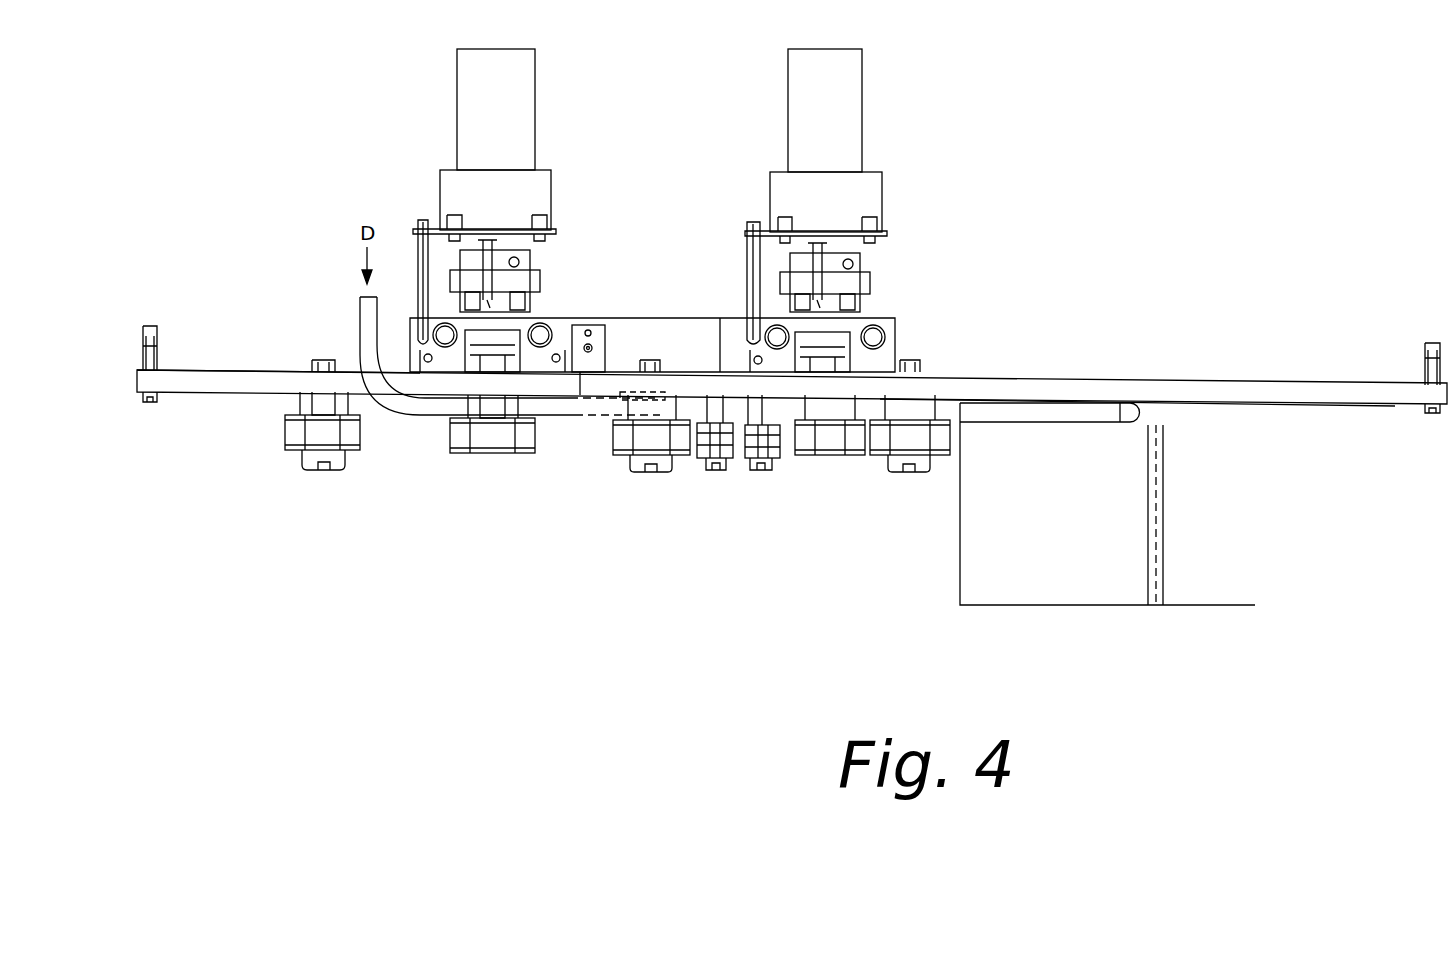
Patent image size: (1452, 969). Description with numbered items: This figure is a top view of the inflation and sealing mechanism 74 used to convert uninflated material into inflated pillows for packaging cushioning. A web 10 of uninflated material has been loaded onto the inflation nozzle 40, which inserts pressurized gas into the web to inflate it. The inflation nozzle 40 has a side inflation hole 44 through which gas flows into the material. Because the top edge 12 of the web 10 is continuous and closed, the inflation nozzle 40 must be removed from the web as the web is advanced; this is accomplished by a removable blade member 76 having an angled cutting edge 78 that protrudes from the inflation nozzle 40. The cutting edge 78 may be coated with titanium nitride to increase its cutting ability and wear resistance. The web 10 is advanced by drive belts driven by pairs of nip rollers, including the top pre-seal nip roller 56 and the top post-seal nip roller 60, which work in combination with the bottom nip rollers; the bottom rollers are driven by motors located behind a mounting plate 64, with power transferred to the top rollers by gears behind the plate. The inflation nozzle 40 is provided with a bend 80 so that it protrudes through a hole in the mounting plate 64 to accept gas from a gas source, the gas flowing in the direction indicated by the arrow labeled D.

The web 10 is at (928, 584).
The top edge 12 is at (1228, 404).
The inflation nozzle 40 is at (1040, 415).
The side inflation hole 44 is at (740, 420).
The top pre-seal nip roller 56 is at (838, 445).
The top post-seal nip roller 60 is at (515, 440).
The mounting plate 64 is at (191, 369).
The inflation and sealing mechanism 74 is at (980, 187).
The removable blade member 76 is at (596, 325).
The angled cutting edge 78 is at (630, 398).
The bend 80 is at (385, 420).